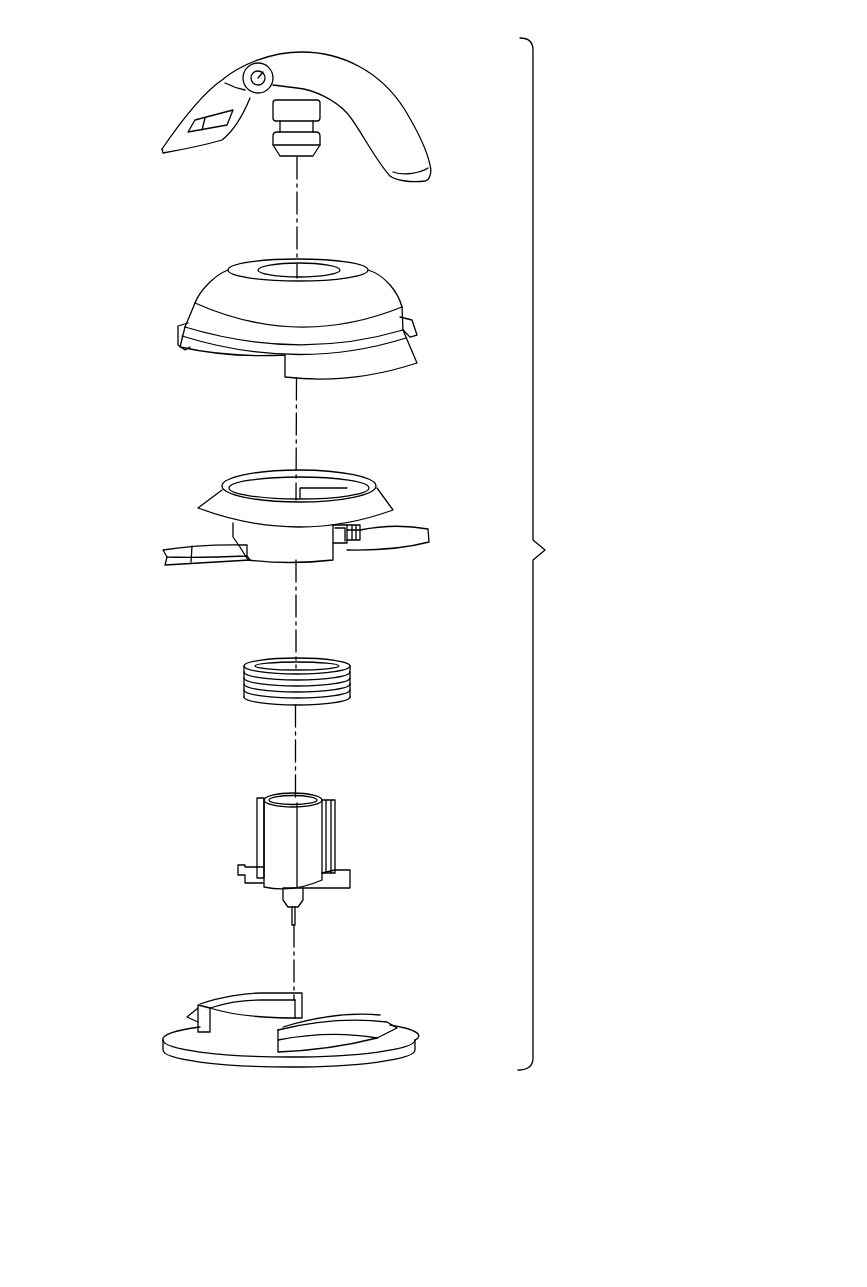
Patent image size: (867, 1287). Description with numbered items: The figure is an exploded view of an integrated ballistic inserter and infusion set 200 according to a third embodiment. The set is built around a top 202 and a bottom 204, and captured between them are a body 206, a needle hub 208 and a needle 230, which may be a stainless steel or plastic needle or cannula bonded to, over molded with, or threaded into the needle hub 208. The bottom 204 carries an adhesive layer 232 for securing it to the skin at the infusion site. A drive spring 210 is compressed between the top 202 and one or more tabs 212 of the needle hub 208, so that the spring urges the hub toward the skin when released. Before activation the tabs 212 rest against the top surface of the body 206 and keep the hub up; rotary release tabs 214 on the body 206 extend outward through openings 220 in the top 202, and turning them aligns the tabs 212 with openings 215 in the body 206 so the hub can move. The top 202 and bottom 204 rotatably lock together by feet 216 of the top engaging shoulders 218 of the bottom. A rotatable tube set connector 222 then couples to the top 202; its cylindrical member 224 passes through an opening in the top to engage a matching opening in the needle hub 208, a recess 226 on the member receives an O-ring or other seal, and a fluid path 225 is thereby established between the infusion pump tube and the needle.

The integrated ballistic inserter and infusion set 200 is at (125, 62).
The top 202 is at (380, 295).
The bottom 204 is at (408, 1032).
The body 206 is at (377, 497).
The needle hub 208 is at (335, 813).
The drive spring 210 is at (248, 675).
The tabs 212 is at (240, 872).
The rotary release tabs 214 is at (428, 537).
The openings 215 is at (338, 543).
The feet 216 is at (400, 350).
The shoulders 218 is at (202, 1005).
The openings 220 is at (203, 343).
The rotatable tube set connector 222 is at (352, 75).
The cylindrical member 224 is at (280, 108).
The fluid path 225 is at (258, 76).
The recess 226 is at (275, 142).
The needle 230 is at (291, 915).
The adhesive layer 232 is at (395, 1057).